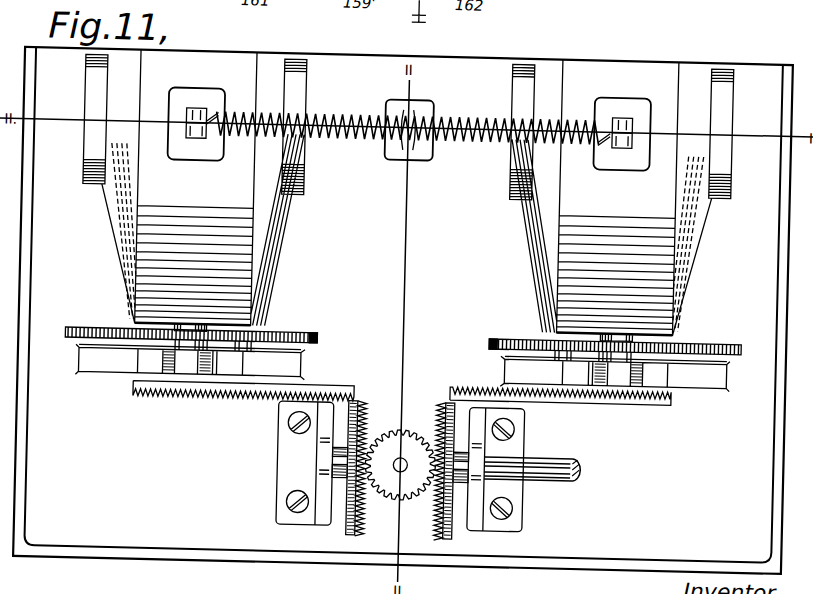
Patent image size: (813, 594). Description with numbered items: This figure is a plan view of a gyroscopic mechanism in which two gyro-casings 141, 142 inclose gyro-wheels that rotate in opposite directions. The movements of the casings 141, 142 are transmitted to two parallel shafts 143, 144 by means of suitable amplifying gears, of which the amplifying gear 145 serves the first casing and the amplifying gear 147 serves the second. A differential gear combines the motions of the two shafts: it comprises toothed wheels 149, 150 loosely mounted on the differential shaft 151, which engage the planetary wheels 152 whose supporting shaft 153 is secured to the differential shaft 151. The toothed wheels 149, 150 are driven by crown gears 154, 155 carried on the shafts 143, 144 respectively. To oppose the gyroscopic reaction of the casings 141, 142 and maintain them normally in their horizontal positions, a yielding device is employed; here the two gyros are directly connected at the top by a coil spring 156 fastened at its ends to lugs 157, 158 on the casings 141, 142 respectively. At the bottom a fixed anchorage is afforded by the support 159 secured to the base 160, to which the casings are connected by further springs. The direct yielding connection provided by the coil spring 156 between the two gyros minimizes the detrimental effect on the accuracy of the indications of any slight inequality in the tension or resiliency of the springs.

The gyro-casing 141 is at (121, 239).
The gyro-casing 142 is at (681, 231).
The parallel shaft 143 is at (246, 384).
The parallel shaft 144 is at (565, 388).
The amplifying gear 145 is at (103, 337).
The amplifying gear 147 is at (727, 340).
The toothed wheel 149 is at (362, 402).
The toothed wheel 150 is at (447, 399).
The differential shaft 151 is at (547, 467).
The planetary wheel 152 is at (393, 490).
The supporting shaft 153 is at (402, 458).
The crown gear 154 is at (177, 400).
The crown gear 155 is at (658, 394).
The coil spring 156 is at (357, 134).
The lug 157 is at (182, 145).
The lug 158 is at (607, 150).
The support 159 is at (427, 107).
The base 160 is at (88, 541).